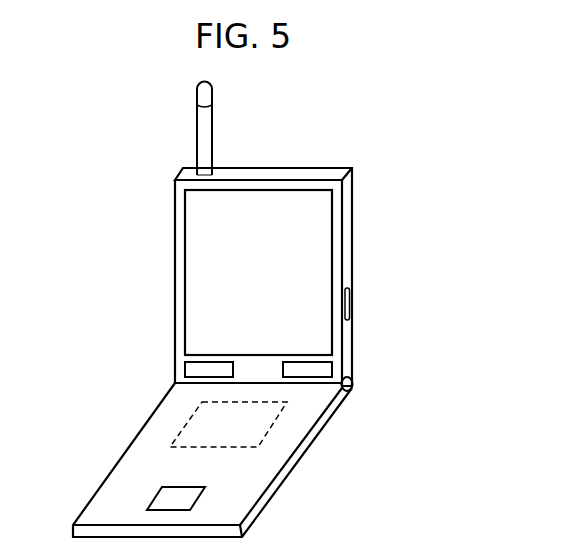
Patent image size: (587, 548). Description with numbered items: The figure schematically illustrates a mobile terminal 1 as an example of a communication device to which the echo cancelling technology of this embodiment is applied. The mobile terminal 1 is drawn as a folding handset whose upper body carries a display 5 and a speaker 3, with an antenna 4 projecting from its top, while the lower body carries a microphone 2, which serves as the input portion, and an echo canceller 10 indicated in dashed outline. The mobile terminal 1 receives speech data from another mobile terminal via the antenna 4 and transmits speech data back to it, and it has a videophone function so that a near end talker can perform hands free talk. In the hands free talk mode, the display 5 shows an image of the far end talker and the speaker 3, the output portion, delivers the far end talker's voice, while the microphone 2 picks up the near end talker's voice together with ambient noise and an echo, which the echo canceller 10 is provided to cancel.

The mobile terminal 1 is at (45, 177).
The microphone 2 is at (162, 498).
The speaker 3 is at (327, 372).
The antenna 4 is at (208, 142).
The display 5 is at (195, 253).
The echo canceller 10 is at (265, 425).